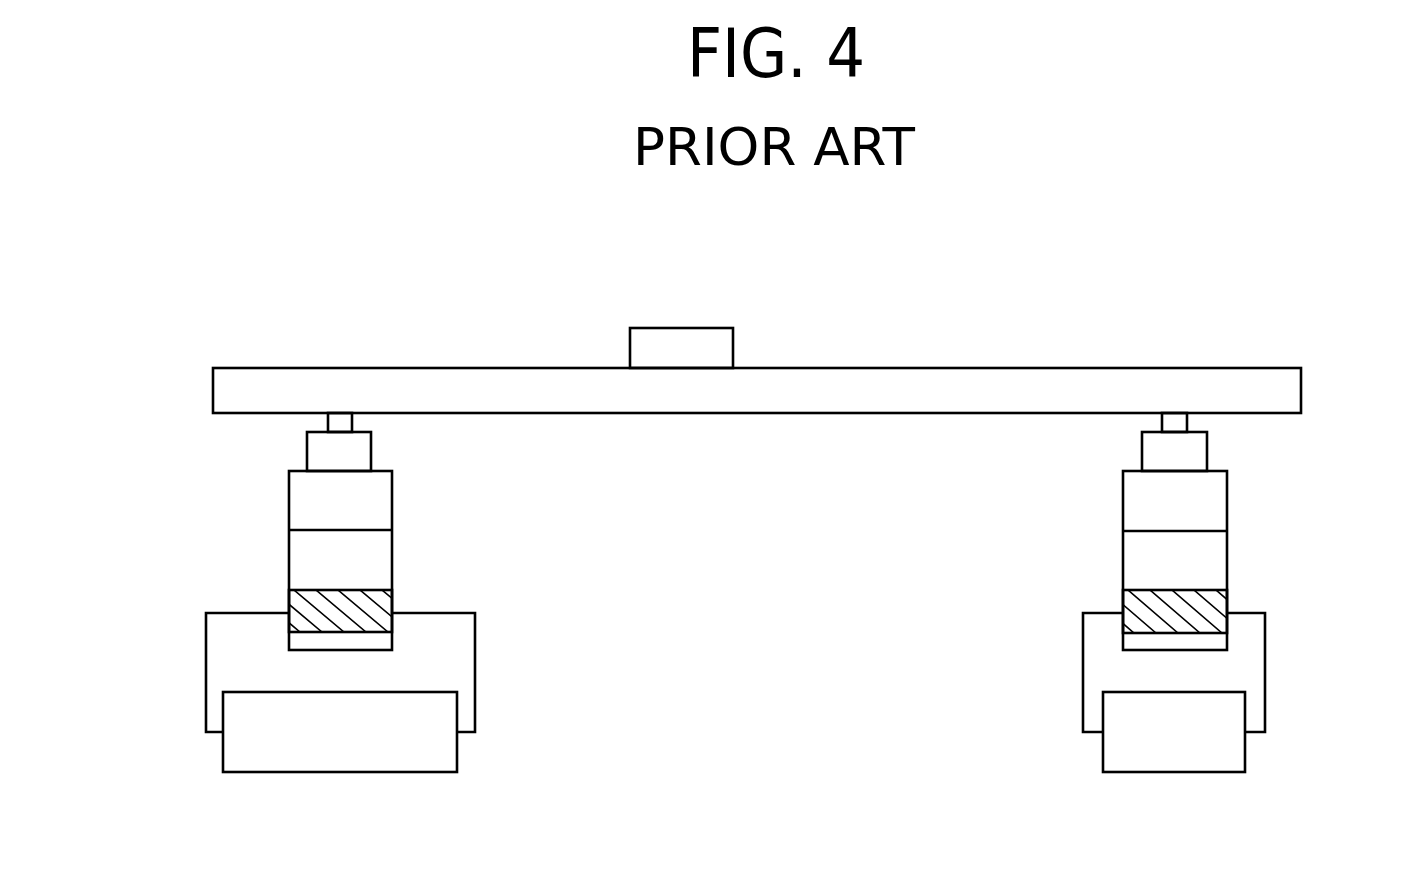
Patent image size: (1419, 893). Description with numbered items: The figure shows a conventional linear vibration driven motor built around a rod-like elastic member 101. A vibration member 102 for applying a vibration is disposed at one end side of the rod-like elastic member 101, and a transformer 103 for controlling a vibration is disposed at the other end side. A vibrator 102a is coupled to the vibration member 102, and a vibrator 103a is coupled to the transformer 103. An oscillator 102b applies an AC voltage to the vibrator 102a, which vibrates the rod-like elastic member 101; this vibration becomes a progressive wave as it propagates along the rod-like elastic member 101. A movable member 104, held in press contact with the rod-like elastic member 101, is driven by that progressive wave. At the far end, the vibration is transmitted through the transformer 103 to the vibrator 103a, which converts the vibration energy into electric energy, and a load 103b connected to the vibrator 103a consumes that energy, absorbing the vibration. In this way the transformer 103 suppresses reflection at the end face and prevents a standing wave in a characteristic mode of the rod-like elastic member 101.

The rod-like elastic member 101 is at (860, 368).
The movable member 104 is at (683, 328).
The vibration member 102 is at (438, 543).
The vibrator 102a is at (288, 600).
The oscillator 102b is at (342, 773).
The transformer for controlling a vibration 103 is at (1271, 543).
The vibrator 103a is at (1122, 598).
The load 103b is at (1175, 773).